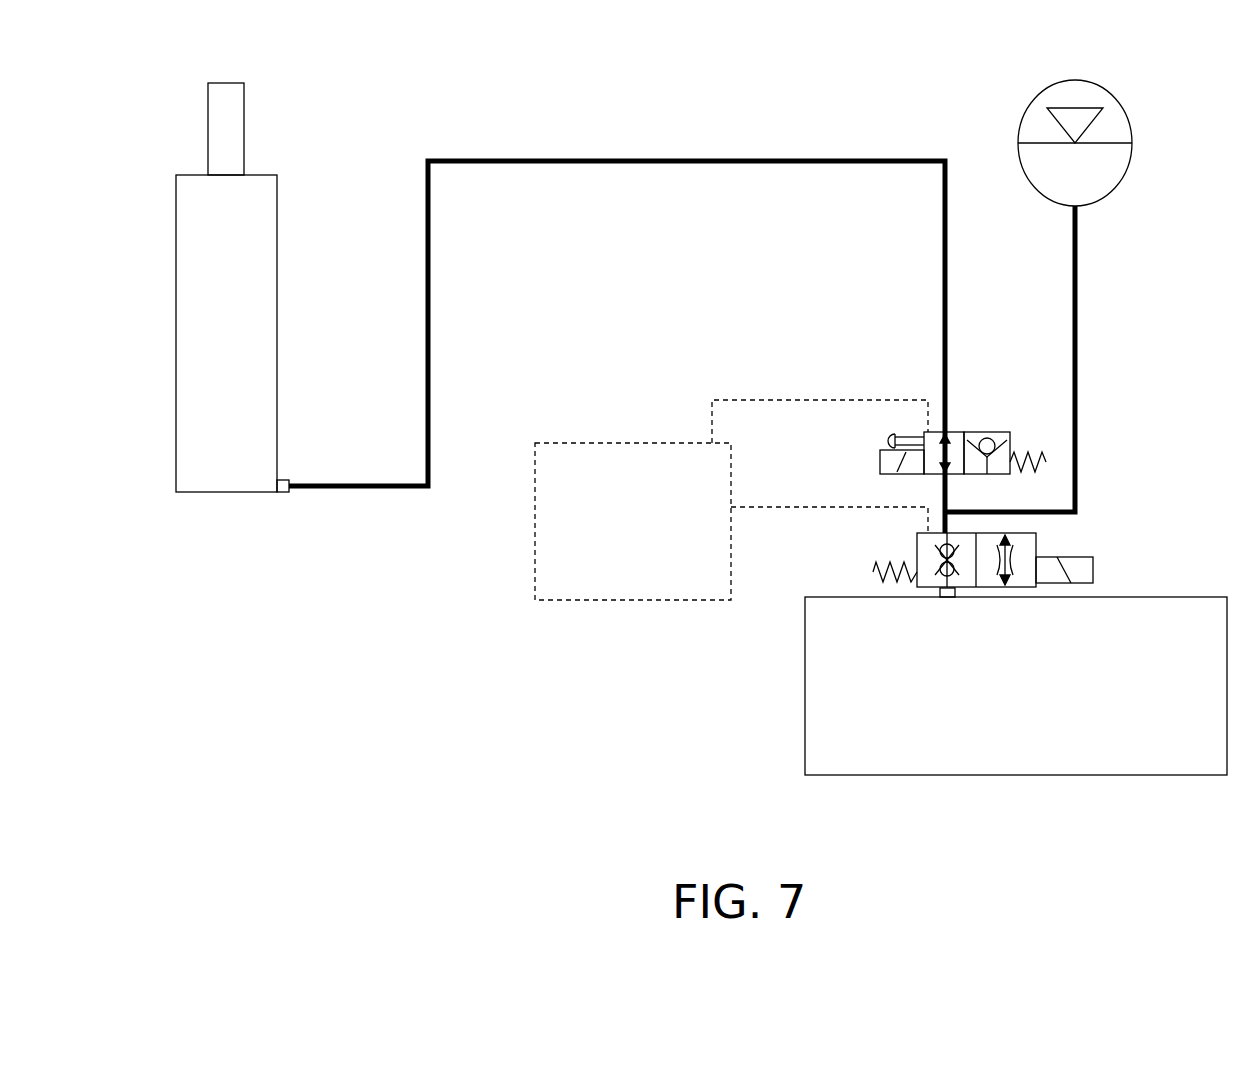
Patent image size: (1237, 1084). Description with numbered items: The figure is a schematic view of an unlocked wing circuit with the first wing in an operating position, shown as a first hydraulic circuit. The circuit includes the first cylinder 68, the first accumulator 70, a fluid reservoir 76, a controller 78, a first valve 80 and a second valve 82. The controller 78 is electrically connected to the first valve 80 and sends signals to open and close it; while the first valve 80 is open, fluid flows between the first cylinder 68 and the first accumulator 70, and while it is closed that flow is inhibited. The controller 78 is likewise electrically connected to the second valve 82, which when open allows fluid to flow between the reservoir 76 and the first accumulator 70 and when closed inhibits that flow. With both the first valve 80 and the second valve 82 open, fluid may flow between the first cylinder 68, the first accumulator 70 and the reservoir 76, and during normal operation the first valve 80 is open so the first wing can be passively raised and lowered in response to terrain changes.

The first cylinder 68 is at (265, 243).
The first accumulator 70 is at (1115, 168).
The fluid reservoir 76 is at (1031, 699).
The controller 78 is at (648, 535).
The first valve 80 is at (1018, 442).
The second valve 82 is at (1102, 570).